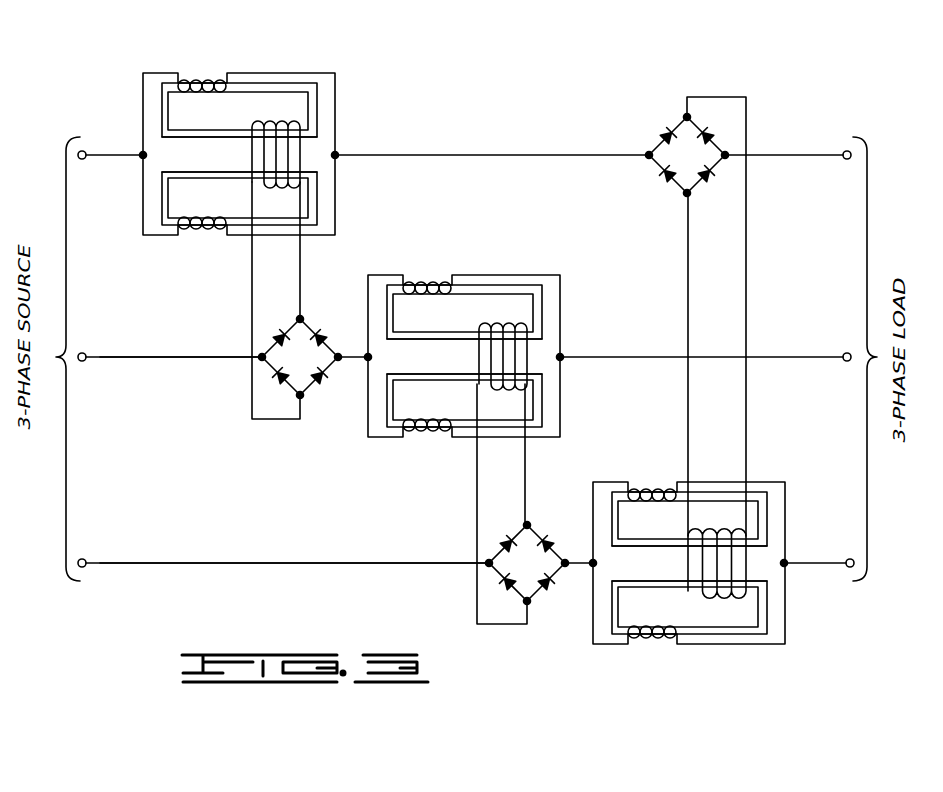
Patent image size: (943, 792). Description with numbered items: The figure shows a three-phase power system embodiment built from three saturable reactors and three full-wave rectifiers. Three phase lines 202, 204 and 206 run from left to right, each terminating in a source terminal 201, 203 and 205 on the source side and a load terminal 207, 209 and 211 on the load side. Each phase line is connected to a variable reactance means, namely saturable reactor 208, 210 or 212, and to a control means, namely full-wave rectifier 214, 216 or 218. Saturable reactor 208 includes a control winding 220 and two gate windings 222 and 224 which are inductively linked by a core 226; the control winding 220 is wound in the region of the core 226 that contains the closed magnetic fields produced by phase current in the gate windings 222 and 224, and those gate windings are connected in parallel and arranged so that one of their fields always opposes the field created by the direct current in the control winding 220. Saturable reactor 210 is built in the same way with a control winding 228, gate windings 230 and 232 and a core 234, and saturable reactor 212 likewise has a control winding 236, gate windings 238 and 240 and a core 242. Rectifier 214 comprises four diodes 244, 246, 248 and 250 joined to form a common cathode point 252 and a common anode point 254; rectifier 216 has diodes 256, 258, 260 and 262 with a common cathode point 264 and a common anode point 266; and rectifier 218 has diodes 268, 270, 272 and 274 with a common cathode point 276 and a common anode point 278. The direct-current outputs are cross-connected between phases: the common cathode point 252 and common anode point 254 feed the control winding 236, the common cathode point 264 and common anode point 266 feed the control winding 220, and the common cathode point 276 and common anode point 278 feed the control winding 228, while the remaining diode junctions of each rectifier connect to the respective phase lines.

The source terminal 201 is at (106, 166).
The phase line 202 is at (413, 157).
The source terminal 203 is at (167, 369).
The phase line 204 is at (150, 359).
The source terminal 205 is at (282, 553).
The phase line 206 is at (302, 561).
The load terminal 207 is at (795, 166).
The saturable reactor 208 is at (249, 151).
The load terminal 209 is at (713, 369).
The saturable reactor 210 is at (464, 342).
The load terminal 211 is at (822, 552).
The saturable reactor 212 is at (697, 570).
The full-wave rectifier 214 is at (677, 300).
The full-wave rectifier 216 is at (284, 322).
The full-wave rectifier 218 is at (504, 511).
The control winding 220 is at (272, 126).
The gate winding 222 is at (213, 79).
The gate winding 224 is at (200, 236).
The core 226 is at (236, 143).
The control winding 228 is at (502, 328).
The gate winding 230 is at (430, 281).
The gate winding 232 is at (430, 440).
The core 234 is at (462, 346).
The control winding 236 is at (733, 592).
The gate winding 238 is at (655, 487).
The gate winding 240 is at (645, 645).
The core 242 is at (676, 556).
The diode 244 is at (660, 128).
The diode 246 is at (706, 132).
The diode 248 is at (706, 183).
The diode 250 is at (662, 184).
The common cathode point 252 is at (688, 114).
The common anode point 254 is at (684, 199).
The diode 256 is at (288, 319).
The diode 258 is at (323, 320).
The diode 260 is at (323, 385).
The diode 262 is at (272, 381).
The common cathode point 264 is at (302, 315).
The common anode point 266 is at (304, 400).
The diode 268 is at (504, 547).
The diode 270 is at (547, 535).
The diode 272 is at (547, 589).
The diode 274 is at (500, 581).
The common cathode point 276 is at (530, 521).
The common anode point 278 is at (532, 607).